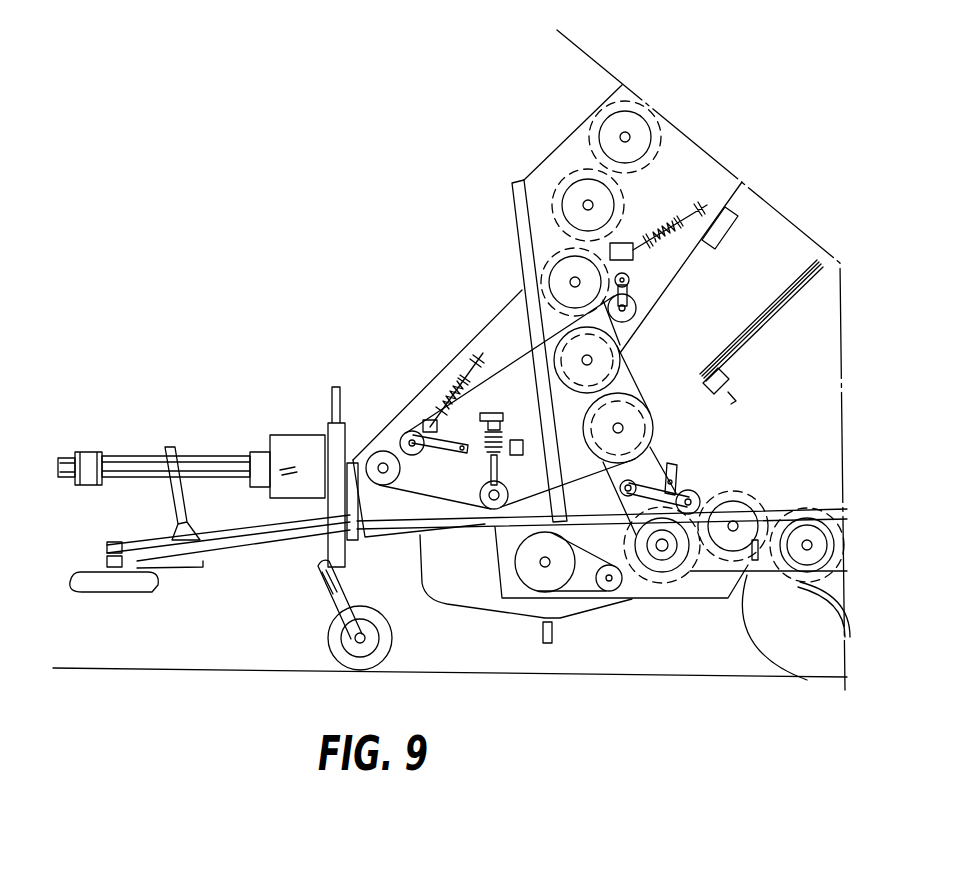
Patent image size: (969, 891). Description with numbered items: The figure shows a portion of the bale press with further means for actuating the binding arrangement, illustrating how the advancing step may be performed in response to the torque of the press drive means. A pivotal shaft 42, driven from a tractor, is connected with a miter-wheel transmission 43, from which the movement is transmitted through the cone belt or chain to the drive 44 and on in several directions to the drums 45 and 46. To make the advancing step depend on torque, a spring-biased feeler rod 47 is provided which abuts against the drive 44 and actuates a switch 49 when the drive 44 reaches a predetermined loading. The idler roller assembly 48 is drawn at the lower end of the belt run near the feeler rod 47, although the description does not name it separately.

The pivotal shaft 42 is at (128, 455).
The miter-wheel transmission 43 is at (292, 433).
The drive 44 is at (398, 503).
The drum 45 is at (623, 202).
The drum 46 is at (782, 507).
The spring-biased feeler rod 47 is at (492, 508).
The idler roller assembly 48 is at (490, 462).
The switch 49 is at (518, 440).